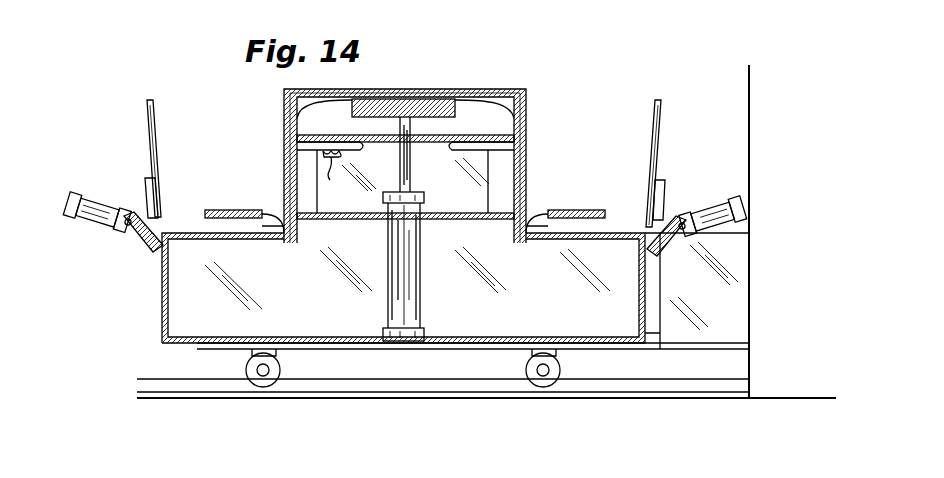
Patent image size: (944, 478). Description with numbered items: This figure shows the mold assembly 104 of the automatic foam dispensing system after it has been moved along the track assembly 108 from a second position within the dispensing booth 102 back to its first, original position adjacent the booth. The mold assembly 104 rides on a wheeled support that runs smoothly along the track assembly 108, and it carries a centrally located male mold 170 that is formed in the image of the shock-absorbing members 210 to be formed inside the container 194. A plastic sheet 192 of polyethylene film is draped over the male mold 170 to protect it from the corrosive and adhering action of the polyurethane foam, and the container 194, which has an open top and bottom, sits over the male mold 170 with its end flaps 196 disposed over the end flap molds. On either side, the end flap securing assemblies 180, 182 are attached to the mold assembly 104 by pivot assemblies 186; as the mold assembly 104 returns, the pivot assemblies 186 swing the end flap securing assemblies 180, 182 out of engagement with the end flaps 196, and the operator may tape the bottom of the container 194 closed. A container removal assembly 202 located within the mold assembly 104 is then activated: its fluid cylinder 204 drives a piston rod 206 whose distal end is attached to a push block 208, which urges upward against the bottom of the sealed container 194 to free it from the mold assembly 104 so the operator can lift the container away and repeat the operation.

The dispensing booth 102 is at (754, 127).
The mold assembly 104 is at (614, 116).
The track assembly 108 is at (373, 393).
The male mold 170 is at (522, 112).
The end flap securing assembly 180 is at (153, 110).
The end flap securing assembly 182 is at (660, 107).
The pivot assembly 186 is at (96, 205).
The plastic sheet 192 is at (290, 99).
The container 194 is at (358, 93).
The end flaps 196 is at (248, 206).
The container removal assembly 202 is at (422, 304).
The fluid cylinder 204 is at (390, 272).
The piston rod 206 is at (411, 178).
The push block 208 is at (420, 102).
The shock-absorbing members 210 is at (200, 222).